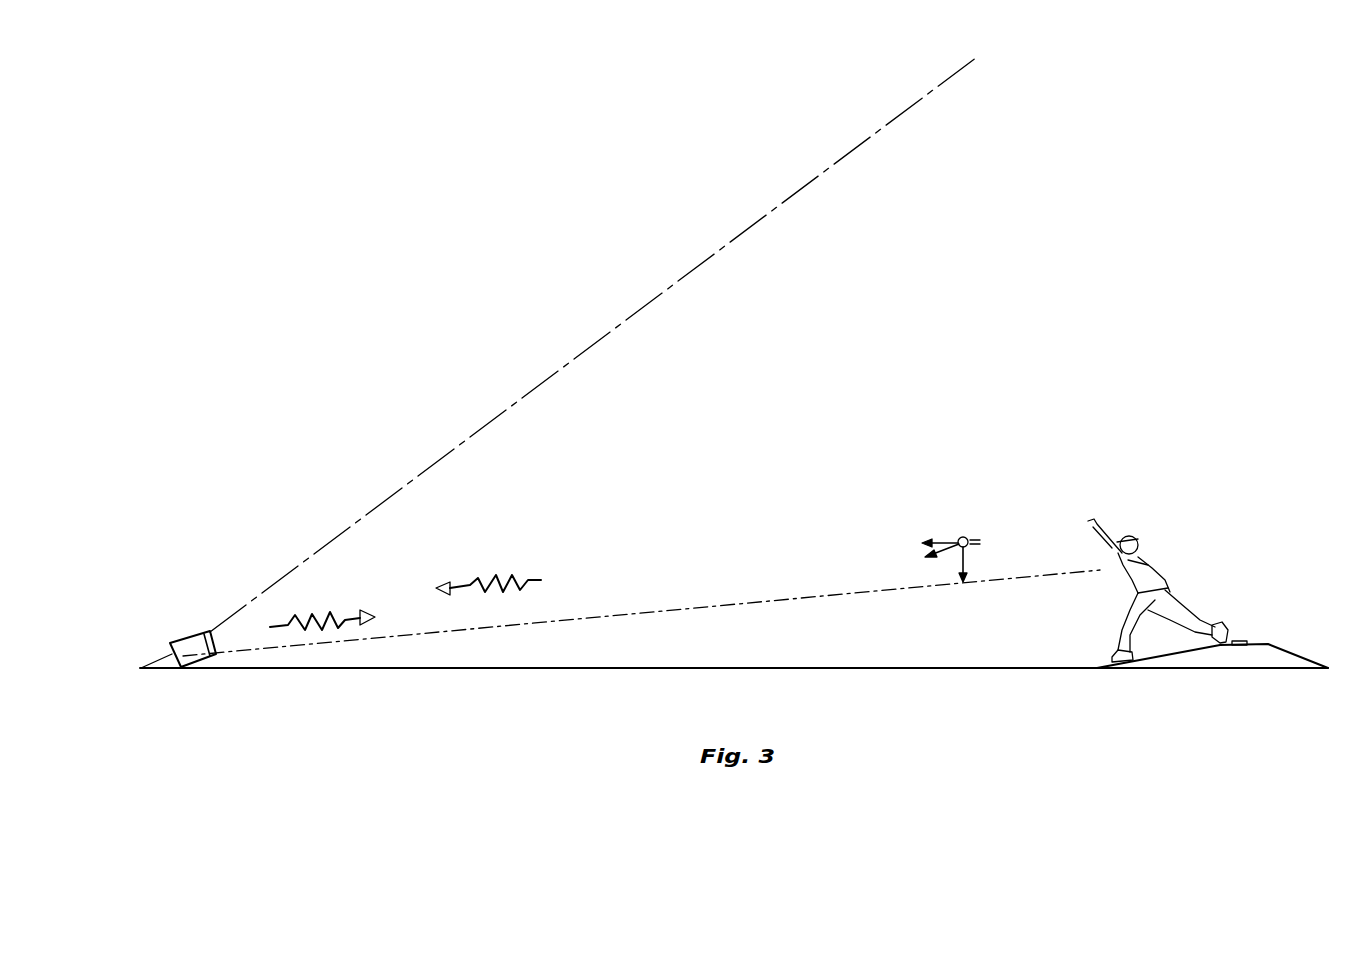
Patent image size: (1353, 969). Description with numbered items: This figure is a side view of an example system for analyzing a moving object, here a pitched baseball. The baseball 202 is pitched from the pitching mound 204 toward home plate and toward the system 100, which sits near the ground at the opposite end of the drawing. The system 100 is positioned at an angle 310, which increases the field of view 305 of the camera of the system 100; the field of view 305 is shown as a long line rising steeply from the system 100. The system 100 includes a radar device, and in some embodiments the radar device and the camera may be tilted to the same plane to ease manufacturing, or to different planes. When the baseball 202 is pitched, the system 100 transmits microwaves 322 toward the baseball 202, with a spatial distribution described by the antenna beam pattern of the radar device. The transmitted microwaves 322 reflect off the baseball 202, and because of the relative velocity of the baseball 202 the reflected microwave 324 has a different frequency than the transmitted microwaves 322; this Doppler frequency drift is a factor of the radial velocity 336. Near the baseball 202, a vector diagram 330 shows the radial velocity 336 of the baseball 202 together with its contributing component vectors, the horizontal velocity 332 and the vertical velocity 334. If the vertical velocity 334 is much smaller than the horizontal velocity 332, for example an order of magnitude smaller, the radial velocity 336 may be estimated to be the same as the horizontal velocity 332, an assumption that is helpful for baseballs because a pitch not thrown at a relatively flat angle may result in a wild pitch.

The system 100 is at (177, 642).
The angle 310 is at (210, 661).
The field of view 305 is at (582, 348).
The transmitted microwaves 322 is at (322, 628).
The reflected microwave 324 is at (478, 578).
The vector diagram 330 is at (975, 518).
The baseball 202 is at (966, 539).
The horizontal velocity 332 is at (949, 542).
The vertical velocity 334 is at (968, 560).
The radial velocity 336 is at (948, 553).
The pitching mound 204 is at (1287, 653).